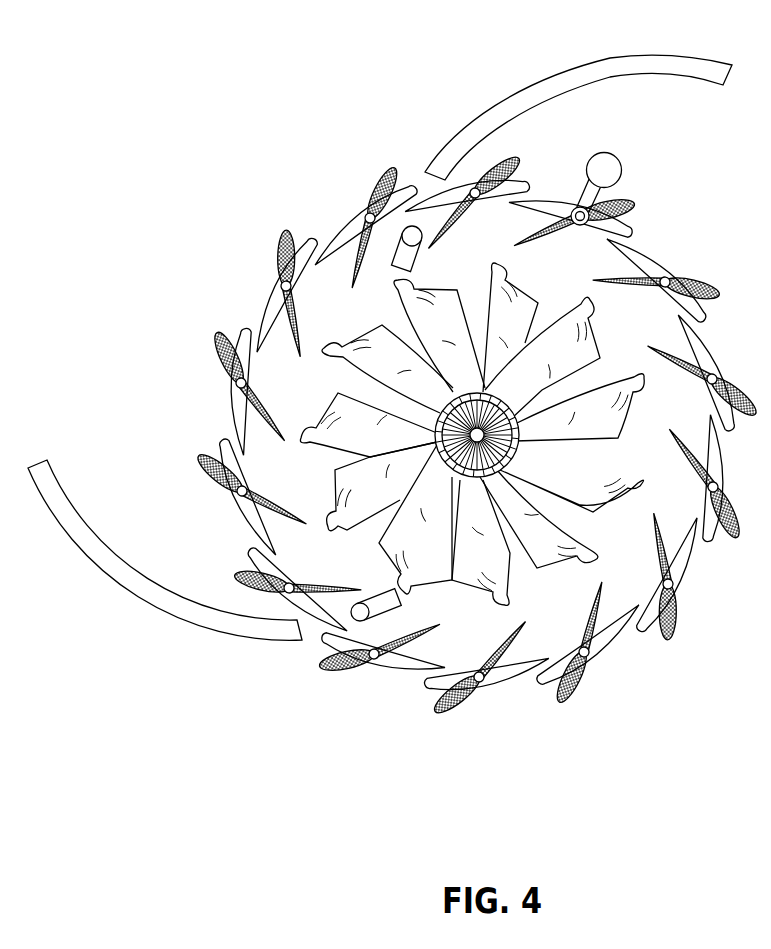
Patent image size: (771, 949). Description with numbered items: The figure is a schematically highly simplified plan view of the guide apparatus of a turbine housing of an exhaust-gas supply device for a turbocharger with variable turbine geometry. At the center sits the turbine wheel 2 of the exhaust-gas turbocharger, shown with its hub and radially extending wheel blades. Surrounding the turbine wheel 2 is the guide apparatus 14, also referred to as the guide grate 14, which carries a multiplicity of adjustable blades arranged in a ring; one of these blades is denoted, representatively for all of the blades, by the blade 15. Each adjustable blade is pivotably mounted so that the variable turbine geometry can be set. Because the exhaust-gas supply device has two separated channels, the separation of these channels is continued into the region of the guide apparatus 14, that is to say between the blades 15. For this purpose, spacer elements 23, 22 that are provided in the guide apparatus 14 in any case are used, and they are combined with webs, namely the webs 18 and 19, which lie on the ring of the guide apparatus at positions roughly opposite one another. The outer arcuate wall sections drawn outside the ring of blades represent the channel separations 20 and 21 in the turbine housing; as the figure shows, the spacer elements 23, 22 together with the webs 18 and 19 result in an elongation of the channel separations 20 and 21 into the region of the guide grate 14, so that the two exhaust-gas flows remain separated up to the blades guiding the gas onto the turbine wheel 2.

The turbine wheel 2 is at (597, 490).
The guide apparatus 14 is at (349, 204).
The blade 15 is at (318, 240).
The web 18 is at (408, 208).
The web 19 is at (385, 607).
The channel separation 20 is at (648, 67).
The channel separation 21 is at (107, 566).
The spacer element 22 is at (352, 614).
The spacer element 23 is at (412, 235).